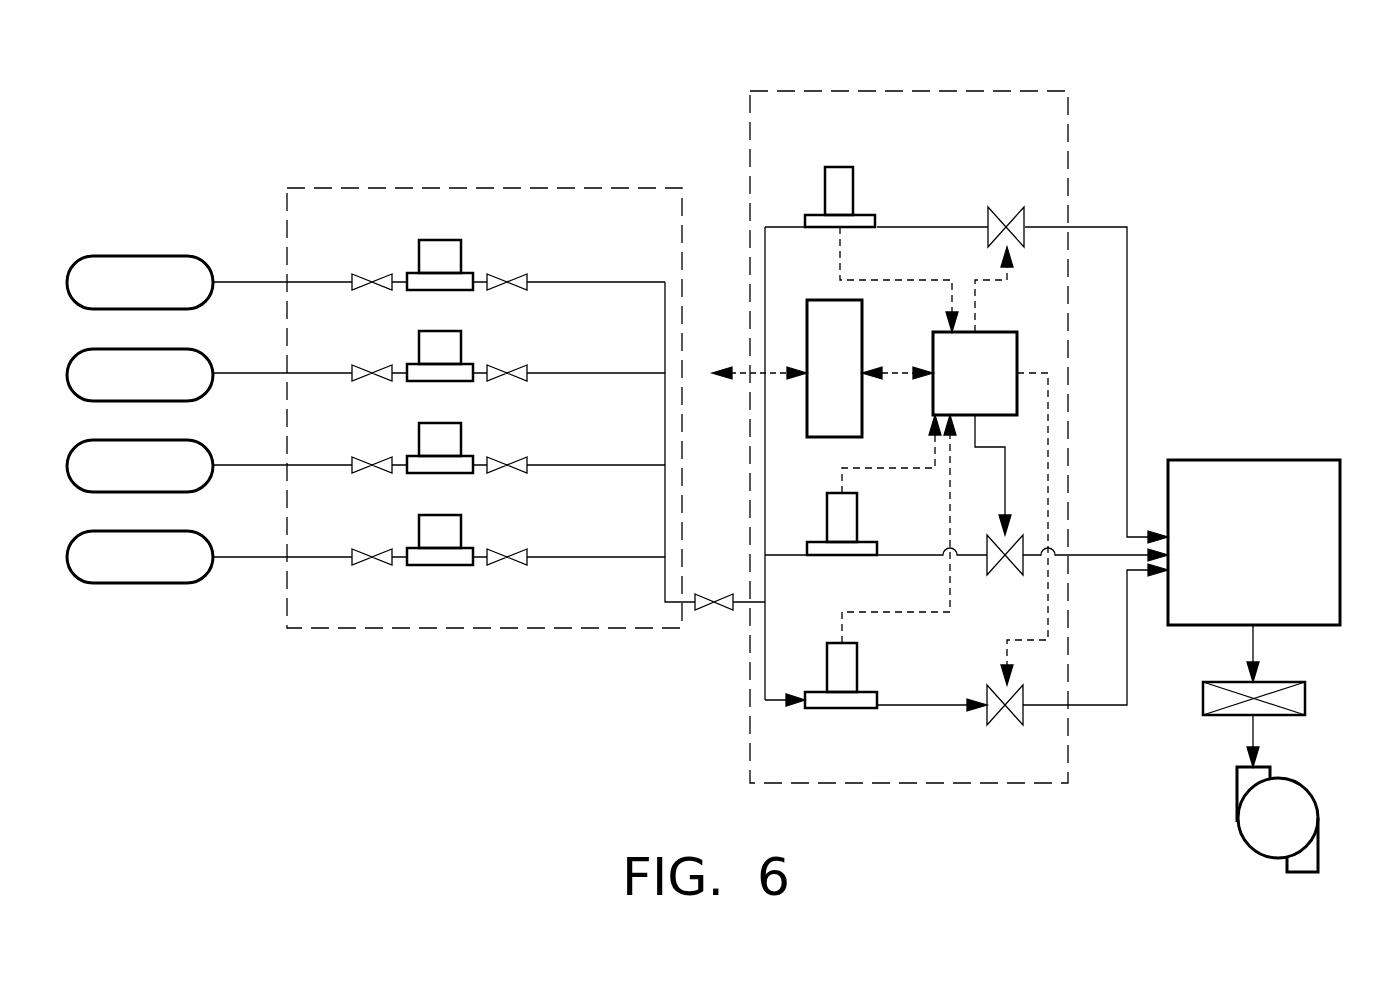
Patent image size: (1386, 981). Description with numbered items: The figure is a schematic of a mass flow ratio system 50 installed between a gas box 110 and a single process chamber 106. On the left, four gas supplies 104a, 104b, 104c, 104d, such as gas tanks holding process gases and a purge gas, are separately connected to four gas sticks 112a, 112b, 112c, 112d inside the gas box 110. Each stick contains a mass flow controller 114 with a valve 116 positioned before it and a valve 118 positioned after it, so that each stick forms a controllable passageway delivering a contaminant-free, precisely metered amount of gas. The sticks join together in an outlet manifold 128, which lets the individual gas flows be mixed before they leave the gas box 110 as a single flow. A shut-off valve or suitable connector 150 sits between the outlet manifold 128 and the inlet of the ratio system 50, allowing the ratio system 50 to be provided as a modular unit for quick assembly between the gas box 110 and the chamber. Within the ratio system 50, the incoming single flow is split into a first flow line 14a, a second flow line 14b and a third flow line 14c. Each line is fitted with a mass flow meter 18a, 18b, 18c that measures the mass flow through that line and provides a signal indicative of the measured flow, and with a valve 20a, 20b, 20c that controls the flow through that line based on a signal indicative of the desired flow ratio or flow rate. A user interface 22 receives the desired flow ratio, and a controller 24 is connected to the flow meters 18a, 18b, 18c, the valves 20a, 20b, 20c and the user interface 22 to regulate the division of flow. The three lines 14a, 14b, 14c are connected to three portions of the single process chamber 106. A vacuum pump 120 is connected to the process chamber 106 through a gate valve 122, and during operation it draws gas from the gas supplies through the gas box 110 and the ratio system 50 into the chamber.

The mass flow ratio system 50 is at (887, 70).
The gas box 110 is at (517, 167).
The gas supply 104a is at (207, 256).
The gas supply 104b is at (207, 349).
The gas supply 104c is at (207, 440).
The gas supply 104d is at (207, 531).
The valve 116 is at (372, 282).
The mass flow controller 114 is at (438, 240).
The valve 118 is at (500, 282).
The gas stick 112a is at (580, 282).
The gas stick 112b is at (580, 373).
The gas stick 112c is at (580, 465).
The gas stick 112d is at (580, 557).
The outlet manifold 128 is at (665, 576).
The shut-off valve or connector 150 is at (714, 612).
The mass flow meter 18a is at (838, 167).
The mass flow meter 18b is at (840, 493).
The mass flow meter 18c is at (838, 643).
The first flow line 14a is at (927, 227).
The second flow line 14b is at (925, 555).
The third flow line 14c is at (927, 707).
The valve 20a is at (1005, 207).
The valve 20b is at (1015, 575).
The valve 20c is at (1010, 725).
The user interface 22 is at (825, 300).
The controller 24 is at (995, 332).
The process chamber 106 is at (1252, 460).
The gate valve 122 is at (1307, 697).
The vacuum pump 120 is at (1310, 788).